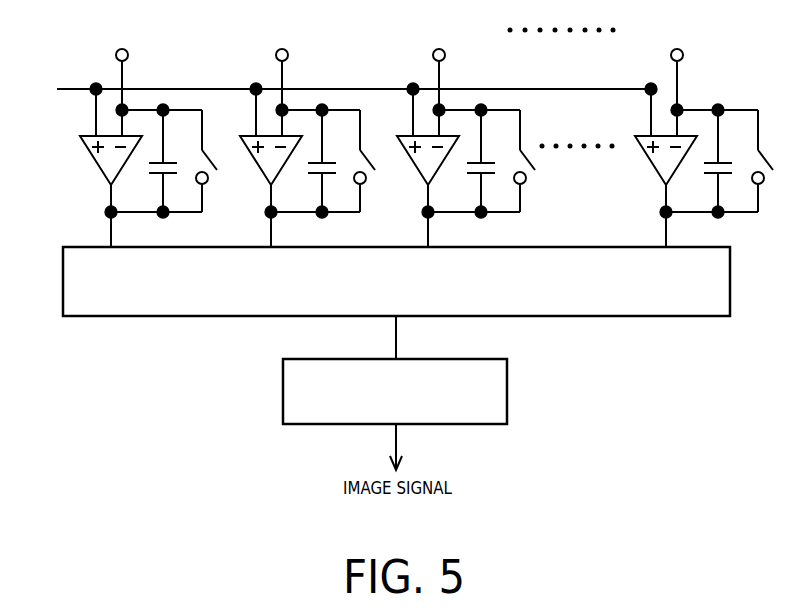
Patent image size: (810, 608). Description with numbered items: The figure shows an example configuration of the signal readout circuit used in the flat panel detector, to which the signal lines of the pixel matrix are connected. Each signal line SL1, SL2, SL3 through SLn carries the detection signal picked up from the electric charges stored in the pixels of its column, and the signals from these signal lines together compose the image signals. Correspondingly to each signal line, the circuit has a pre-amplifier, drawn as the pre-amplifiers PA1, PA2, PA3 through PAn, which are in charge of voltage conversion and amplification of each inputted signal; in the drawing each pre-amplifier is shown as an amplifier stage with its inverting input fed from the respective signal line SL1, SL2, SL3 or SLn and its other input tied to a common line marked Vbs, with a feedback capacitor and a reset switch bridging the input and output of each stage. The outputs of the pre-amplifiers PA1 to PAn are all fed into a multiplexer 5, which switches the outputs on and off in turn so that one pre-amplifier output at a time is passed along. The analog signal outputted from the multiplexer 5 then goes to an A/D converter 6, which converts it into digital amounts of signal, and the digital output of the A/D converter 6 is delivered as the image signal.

The multiplexer 5 is at (730, 279).
The A/D converter 6 is at (507, 389).
The pre-amplifier PA1 is at (93, 170).
The pre-amplifier PA2 is at (253, 170).
The pre-amplifier PA3 is at (410, 170).
The pre-amplifier PAn is at (648, 170).
The signal line SL1 is at (121, 77).
The signal line SL2 is at (281, 77).
The signal line SL3 is at (438, 77).
The signal line SLn is at (678, 77).
The bias voltage Vbs is at (336, 89).